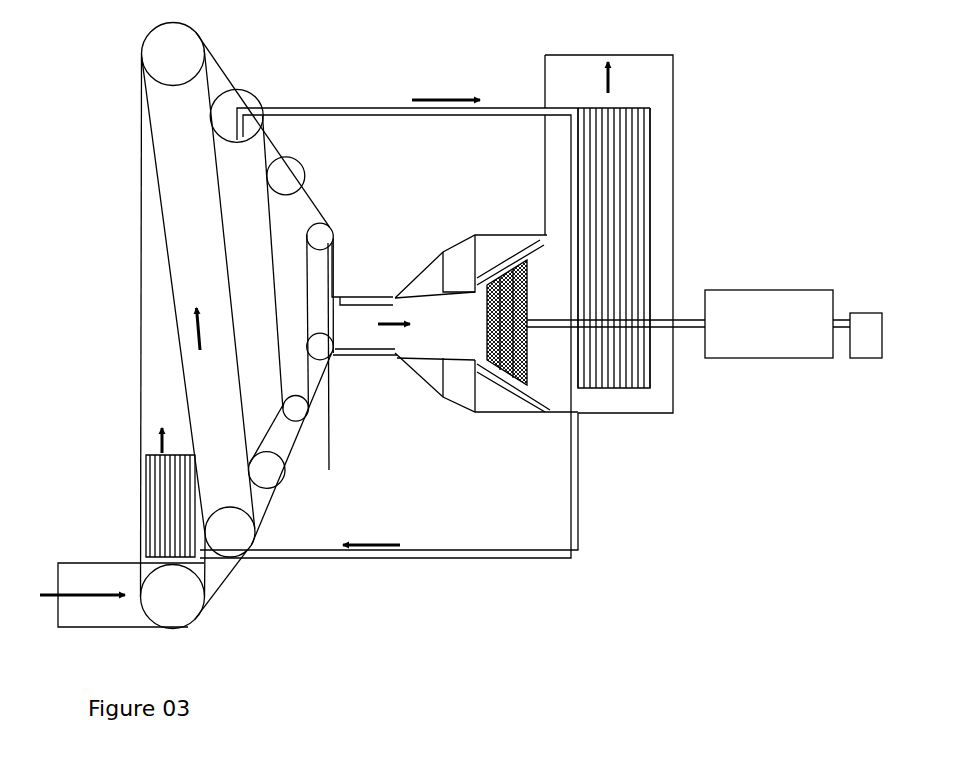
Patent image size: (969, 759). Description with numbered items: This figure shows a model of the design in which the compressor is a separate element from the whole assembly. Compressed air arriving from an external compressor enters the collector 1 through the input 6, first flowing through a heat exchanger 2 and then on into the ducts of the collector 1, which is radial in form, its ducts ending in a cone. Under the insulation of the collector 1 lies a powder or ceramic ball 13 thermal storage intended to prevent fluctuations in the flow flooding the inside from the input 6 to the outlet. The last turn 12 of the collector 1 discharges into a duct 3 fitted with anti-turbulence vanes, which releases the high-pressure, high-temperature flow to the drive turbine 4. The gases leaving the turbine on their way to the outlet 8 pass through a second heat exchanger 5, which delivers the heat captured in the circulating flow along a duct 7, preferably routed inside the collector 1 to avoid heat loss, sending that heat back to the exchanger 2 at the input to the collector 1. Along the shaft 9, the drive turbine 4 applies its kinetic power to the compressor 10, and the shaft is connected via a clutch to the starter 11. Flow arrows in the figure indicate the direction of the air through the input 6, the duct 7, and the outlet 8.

The collector 1 is at (140, 390).
The heat exchanger 2 is at (144, 490).
The duct 3 is at (363, 358).
The drive turbine 4 is at (486, 327).
The heat exchanger 5 is at (570, 377).
The input 6 is at (57, 608).
The duct 7 is at (292, 107).
The outlet 8 is at (575, 57).
The shaft 9 is at (690, 329).
The compressor 10 is at (792, 360).
The starter 11 is at (860, 360).
The last turn 12 is at (334, 282).
The powder or ceramic ball thermal storage 13 is at (316, 366).